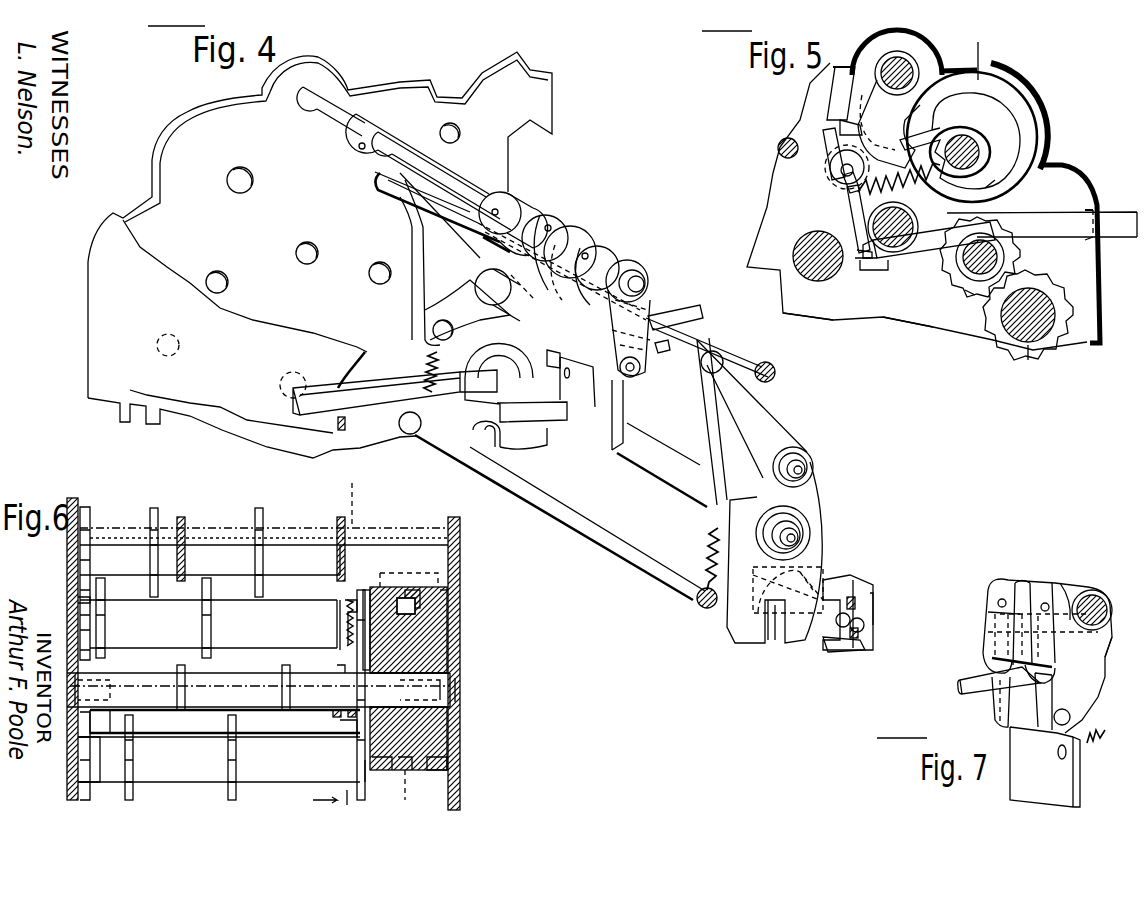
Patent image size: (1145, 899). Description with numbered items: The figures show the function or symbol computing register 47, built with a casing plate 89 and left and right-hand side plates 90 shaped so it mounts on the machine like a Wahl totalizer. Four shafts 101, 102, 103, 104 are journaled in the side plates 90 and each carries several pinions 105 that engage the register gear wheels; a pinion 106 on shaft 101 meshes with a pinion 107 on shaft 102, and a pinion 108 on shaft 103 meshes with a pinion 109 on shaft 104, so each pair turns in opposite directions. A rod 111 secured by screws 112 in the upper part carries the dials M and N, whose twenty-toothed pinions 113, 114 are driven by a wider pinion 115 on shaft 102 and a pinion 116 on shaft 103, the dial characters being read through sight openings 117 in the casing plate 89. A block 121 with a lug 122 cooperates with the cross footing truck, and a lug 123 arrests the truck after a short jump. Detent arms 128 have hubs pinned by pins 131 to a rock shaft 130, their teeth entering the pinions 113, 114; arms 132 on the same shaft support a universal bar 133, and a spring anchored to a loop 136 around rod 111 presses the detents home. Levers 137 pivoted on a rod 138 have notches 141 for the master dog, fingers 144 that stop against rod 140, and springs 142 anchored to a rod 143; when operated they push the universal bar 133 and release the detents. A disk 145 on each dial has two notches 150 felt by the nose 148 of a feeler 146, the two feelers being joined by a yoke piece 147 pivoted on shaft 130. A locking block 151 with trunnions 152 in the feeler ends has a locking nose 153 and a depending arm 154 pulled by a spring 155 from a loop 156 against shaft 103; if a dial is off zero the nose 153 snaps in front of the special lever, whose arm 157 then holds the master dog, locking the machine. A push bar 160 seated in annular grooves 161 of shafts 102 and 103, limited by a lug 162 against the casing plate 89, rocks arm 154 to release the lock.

In FIG. 4, the function or symbol computing register 47 is at (320, 225).
In FIG. 5, the function or symbol computing register 47 is at (908, 329).
In FIG. 4, the casing plate 89 is at (165, 270).
In FIG. 5, the casing plate 89 is at (1080, 192).
In FIG. 4, the side plates 90 is at (510, 168).
In FIG. 5, the side plates 90 is at (878, 318).
In FIG. 6, the side plates 90 is at (463, 622).
In FIG. 7, the side plates 90 is at (883, 606).
In FIG. 5, the shaft 101 is at (1026, 350).
In FIG. 6, the shaft 101 is at (219, 759).
In FIG. 5, the shaft 102 is at (990, 240).
In FIG. 6, the shaft 102 is at (225, 721).
In FIG. 5, the shaft 103 is at (893, 248).
In FIG. 6, the shaft 103 is at (213, 624).
In FIG. 5, the shaft 104 is at (825, 275).
In FIG. 6, the shaft 104 is at (264, 551).
In FIG. 5, the pinions 105 is at (995, 330).
In FIG. 6, the pinions 105 is at (157, 515).
In FIG. 6, the pinion 106 is at (82, 772).
In FIG. 6, the pinion 107 is at (85, 722).
In FIG. 6, the pinion 108 is at (78, 600).
In FIG. 6, the pinion 109 is at (98, 653).
In FIG. 5, the shaft or rod 111 is at (980, 145).
In FIG. 6, the shaft or rod 111 is at (150, 670).
In FIG. 6, the screws 112 is at (100, 692).
In FIG. 6, the pinion 113 is at (402, 771).
In FIG. 6, the pinion 114 is at (447, 762).
In FIG. 5, the pinion 115 is at (967, 290).
In FIG. 6, the pinion 115 is at (407, 786).
In FIG. 5, the pinion 116 is at (872, 262).
In FIG. 6, the pinion 116 is at (447, 591).
In FIG. 5, the sight openings 117 is at (1030, 70).
In FIG. 4, the block 121 is at (818, 598).
In FIG. 4, the lug 122 is at (775, 643).
In FIG. 4, the lug 123 is at (845, 645).
In FIG. 4, the arms 128 is at (580, 232).
In FIG. 5, the arms 128 is at (879, 124).
In FIG. 6, the arms 128 is at (411, 625).
In FIG. 7, the arms 128 is at (990, 615).
In FIG. 4, the rock shaft 130 is at (332, 111).
In FIG. 5, the rock shaft 130 is at (900, 57).
In FIG. 7, the rock shaft 130 is at (1097, 595).
In FIG. 4, the pins 131 is at (576, 234).
In FIG. 4, the arms 132 is at (485, 250).
In FIG. 6, the arms 132 is at (185, 525).
In FIG. 4, the universal bar 133 is at (490, 228).
In FIG. 5, the universal bar 133 is at (778, 147).
In FIG. 6, the universal bar 133 is at (296, 530).
In FIG. 6, the loop 136 is at (333, 715).
In FIG. 4, the levers 137 is at (412, 296).
In FIG. 5, the levers 137 is at (757, 225).
In FIG. 4, the rod 138 is at (658, 468).
In FIG. 4, the rod 140 is at (492, 278).
In FIG. 4, the notch 141 is at (790, 588).
In FIG. 4, the spring 142 is at (430, 368).
In FIG. 4, the rod 143 is at (578, 512).
In FIG. 4, the finger 144 is at (826, 466).
In FIG. 5, the disk 145 is at (968, 92).
In FIG. 6, the disk 145 is at (362, 766).
In FIG. 4, the feeler 146 is at (560, 222).
In FIG. 5, the feeler 146 is at (848, 130).
In FIG. 6, the feeler 146 is at (365, 572).
In FIG. 7, the feeler 146 is at (1103, 648).
In FIG. 4, the yoke piece 147 is at (672, 313).
In FIG. 5, the yoke piece 147 is at (836, 108).
In FIG. 7, the yoke piece 147 is at (995, 640).
In FIG. 4, the nose 148 is at (566, 376).
In FIG. 6, the nose 148 is at (406, 721).
In FIG. 7, the nose 148 is at (1103, 690).
In FIG. 5, the notches 150 is at (928, 110).
In FIG. 4, the locking block 151 is at (629, 333).
In FIG. 5, the locking block 151 is at (830, 137).
In FIG. 7, the locking block 151 is at (1003, 726).
In FIG. 4, the trunnions 152 is at (640, 373).
In FIG. 5, the trunnions 152 is at (845, 186).
In FIG. 7, the trunnions 152 is at (1064, 711).
In FIG. 4, the locking nose 153 is at (665, 343).
In FIG. 5, the locking nose 153 is at (838, 162).
In FIG. 6, the locking nose 153 is at (408, 588).
In FIG. 7, the locking nose 153 is at (980, 688).
In FIG. 4, the depending arm 154 is at (615, 408).
In FIG. 5, the depending arm 154 is at (850, 210).
In FIG. 6, the depending arm 154 is at (340, 597).
In FIG. 7, the depending arm 154 is at (1075, 783).
In FIG. 5, the spring 155 is at (940, 158).
In FIG. 6, the spring 155 is at (353, 598).
In FIG. 7, the spring 155 is at (1106, 729).
In FIG. 5, the loop 156 is at (973, 130).
In FIG. 6, the loop 156 is at (345, 724).
In FIG. 4, the arm 157 is at (800, 640).
In FIG. 4, the key or push bar 160 is at (313, 410).
In FIG. 5, the key or push bar 160 is at (1072, 216).
In FIG. 5, the annular grooves 161 is at (915, 225).
In FIG. 6, the annular grooves 161 is at (340, 608).
In FIG. 4, the lug 162 is at (347, 412).
In FIG. 5, the lug 162 is at (1090, 240).